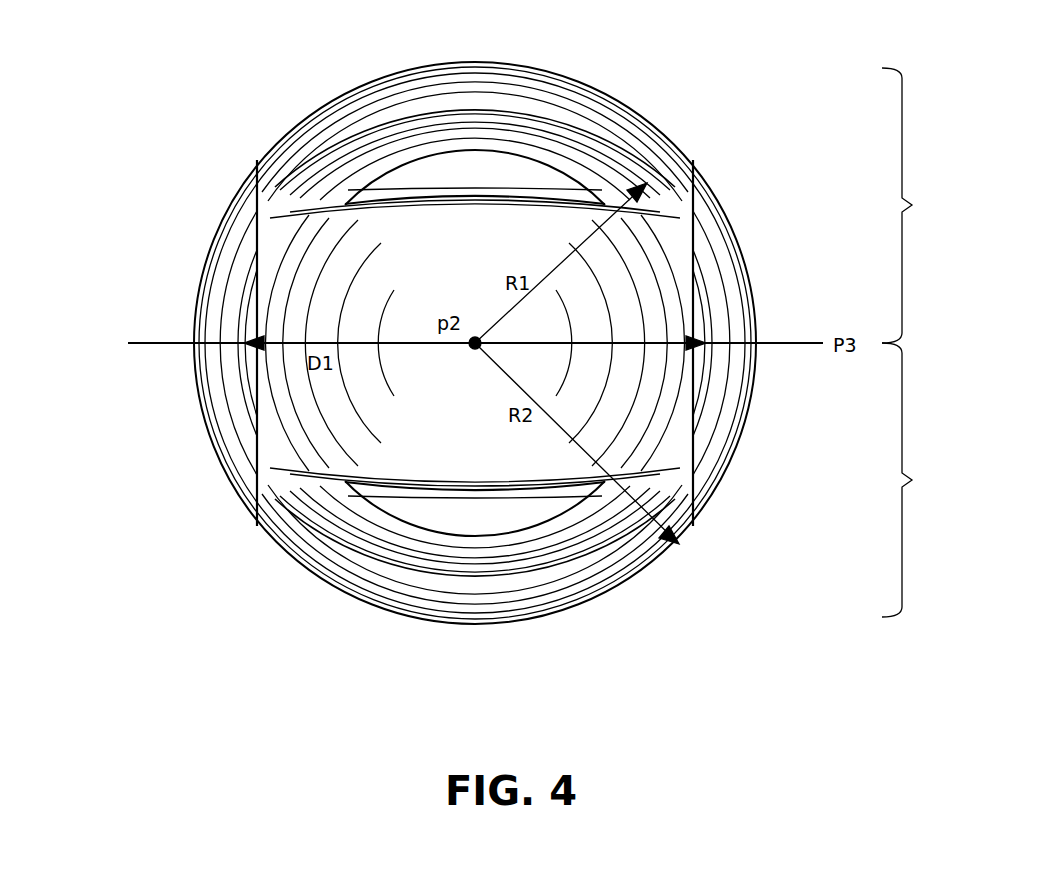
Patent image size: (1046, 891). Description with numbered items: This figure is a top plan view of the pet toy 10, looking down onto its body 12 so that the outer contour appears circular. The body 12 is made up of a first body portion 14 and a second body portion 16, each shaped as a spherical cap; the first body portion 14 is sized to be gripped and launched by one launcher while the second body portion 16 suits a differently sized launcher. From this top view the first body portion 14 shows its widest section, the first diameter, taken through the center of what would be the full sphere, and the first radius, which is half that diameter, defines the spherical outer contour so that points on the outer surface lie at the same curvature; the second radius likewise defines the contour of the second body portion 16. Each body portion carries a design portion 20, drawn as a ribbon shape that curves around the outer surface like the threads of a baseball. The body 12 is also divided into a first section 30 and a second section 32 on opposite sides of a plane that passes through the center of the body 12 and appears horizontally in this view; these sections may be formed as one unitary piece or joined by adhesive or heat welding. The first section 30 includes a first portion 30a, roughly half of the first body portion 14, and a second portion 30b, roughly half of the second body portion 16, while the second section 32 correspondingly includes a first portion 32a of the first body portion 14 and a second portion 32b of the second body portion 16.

The pet toy 10 is at (95, 166).
The body 12 is at (752, 282).
The first body portion 14 is at (627, 163).
The second body portion 16 is at (730, 540).
The design portion 20 is at (512, 168).
The first section 30 is at (913, 205).
The first portion of the first section 30a is at (455, 253).
The second portion of the first section 30b is at (242, 183).
The second section 32 is at (913, 480).
The first portion of the second section 32a is at (475, 415).
The second portion of the second section 32b is at (735, 458).